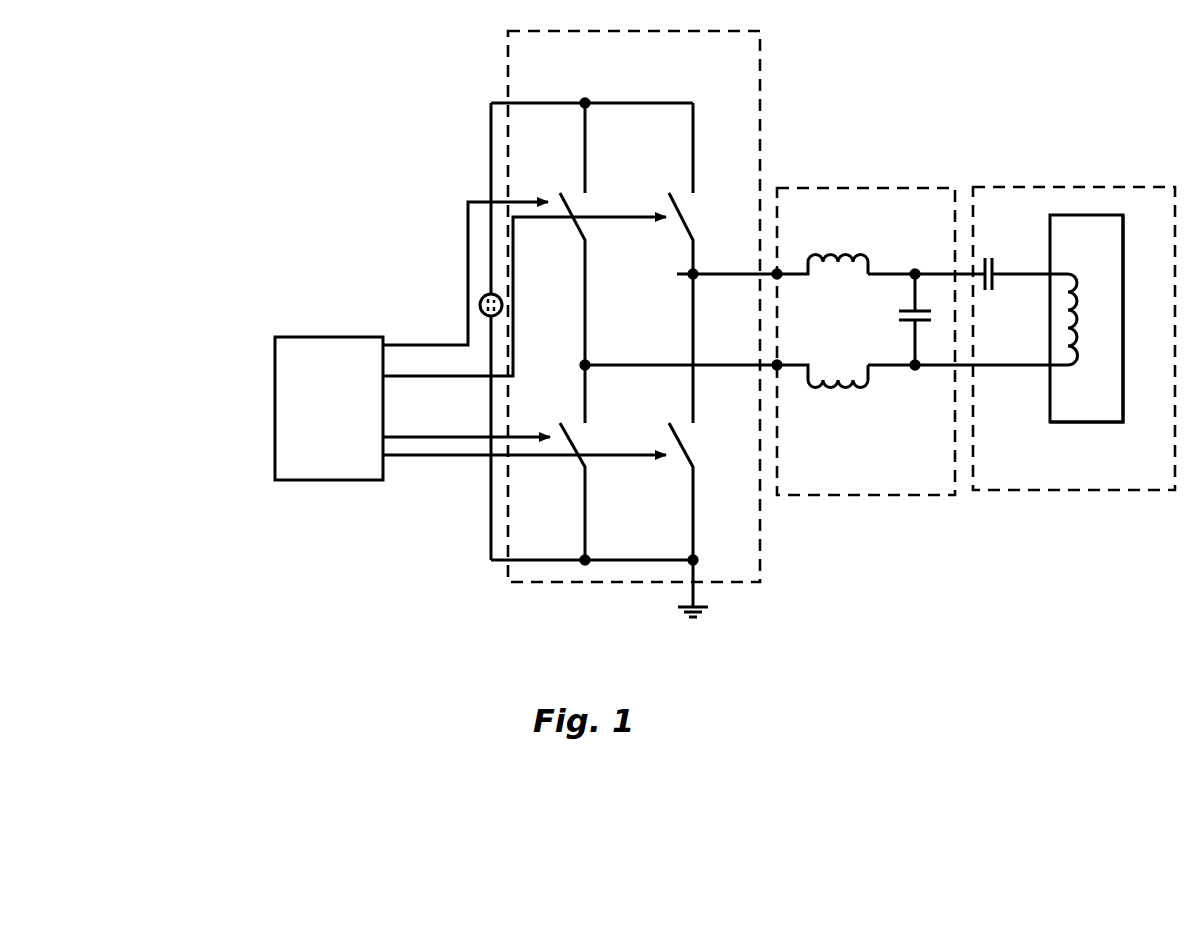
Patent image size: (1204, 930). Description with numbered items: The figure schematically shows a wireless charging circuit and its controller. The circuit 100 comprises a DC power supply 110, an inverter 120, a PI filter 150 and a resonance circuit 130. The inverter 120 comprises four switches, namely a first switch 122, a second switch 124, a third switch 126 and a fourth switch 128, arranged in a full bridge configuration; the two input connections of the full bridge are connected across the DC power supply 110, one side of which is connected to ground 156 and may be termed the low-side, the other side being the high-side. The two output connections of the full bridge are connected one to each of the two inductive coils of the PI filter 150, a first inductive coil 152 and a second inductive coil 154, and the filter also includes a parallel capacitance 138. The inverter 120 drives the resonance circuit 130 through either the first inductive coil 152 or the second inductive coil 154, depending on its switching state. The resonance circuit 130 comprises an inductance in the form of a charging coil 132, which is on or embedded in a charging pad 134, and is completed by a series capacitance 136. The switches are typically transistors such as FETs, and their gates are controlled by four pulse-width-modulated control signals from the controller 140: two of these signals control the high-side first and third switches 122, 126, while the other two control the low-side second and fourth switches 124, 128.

The circuit 100 is at (338, 98).
The DC power supply 110 is at (487, 295).
The inverter 120 is at (747, 43).
The switch S1 122 is at (573, 200).
The switch S2 124 is at (565, 462).
The switch S3 126 is at (665, 205).
The switch S4 128 is at (673, 462).
The resonance circuit 130 is at (1063, 187).
The charging coil Lp 132 is at (1082, 365).
The charging pad 134 is at (1108, 413).
The series capacitance Cser 136 is at (997, 266).
The capacitance Cpar 138 is at (922, 327).
The controller 140 is at (290, 352).
The PI filter 150 is at (870, 188).
The inductive coil L1 152 is at (813, 252).
The inductive coil L2 154 is at (813, 390).
The ground 156 is at (700, 612).